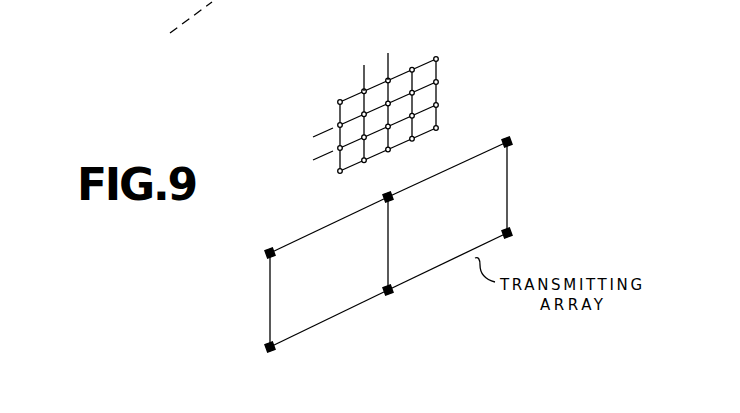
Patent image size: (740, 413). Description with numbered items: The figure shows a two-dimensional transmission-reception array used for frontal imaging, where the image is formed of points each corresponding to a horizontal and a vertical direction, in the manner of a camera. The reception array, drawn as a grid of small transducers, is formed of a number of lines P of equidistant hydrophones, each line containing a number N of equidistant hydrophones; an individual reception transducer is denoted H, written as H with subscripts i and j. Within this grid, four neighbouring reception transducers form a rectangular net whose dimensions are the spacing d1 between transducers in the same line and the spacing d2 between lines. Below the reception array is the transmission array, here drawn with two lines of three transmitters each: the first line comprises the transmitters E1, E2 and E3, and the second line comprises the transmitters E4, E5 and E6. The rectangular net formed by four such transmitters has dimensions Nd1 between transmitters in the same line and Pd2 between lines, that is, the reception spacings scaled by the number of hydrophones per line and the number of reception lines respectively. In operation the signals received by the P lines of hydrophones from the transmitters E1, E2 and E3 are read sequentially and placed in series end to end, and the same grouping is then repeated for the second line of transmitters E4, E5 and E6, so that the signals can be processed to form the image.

The number of reception lines P is at (452, 58).
The reception transducer H is at (390, 105).
The spacing between reception transducers in the same line d1 is at (352, 77).
The spacing between reception lines d2 is at (320, 170).
The number of hydrophones per line N is at (438, 142).
The transmitter E1 is at (275, 256).
The transmitter E2 is at (393, 200).
The transmitter E3 is at (511, 146).
The transmitter E4 is at (265, 352).
The transmitter E5 is at (393, 293).
The transmitter E6 is at (511, 237).
The spacing between transmitter lines Pd2 is at (246, 260).
The spacing between transmitters in the same line Nd1 is at (390, 312).